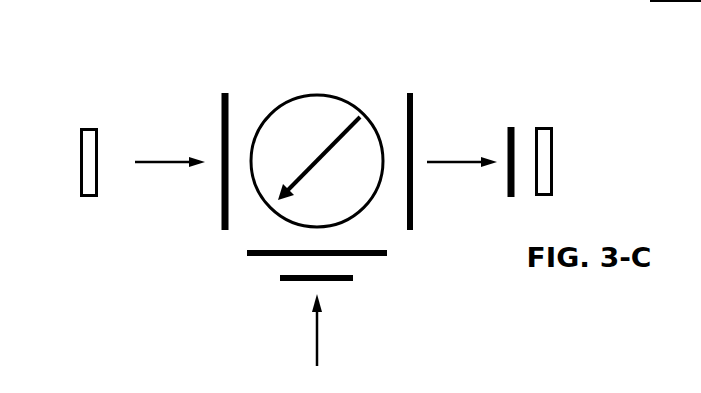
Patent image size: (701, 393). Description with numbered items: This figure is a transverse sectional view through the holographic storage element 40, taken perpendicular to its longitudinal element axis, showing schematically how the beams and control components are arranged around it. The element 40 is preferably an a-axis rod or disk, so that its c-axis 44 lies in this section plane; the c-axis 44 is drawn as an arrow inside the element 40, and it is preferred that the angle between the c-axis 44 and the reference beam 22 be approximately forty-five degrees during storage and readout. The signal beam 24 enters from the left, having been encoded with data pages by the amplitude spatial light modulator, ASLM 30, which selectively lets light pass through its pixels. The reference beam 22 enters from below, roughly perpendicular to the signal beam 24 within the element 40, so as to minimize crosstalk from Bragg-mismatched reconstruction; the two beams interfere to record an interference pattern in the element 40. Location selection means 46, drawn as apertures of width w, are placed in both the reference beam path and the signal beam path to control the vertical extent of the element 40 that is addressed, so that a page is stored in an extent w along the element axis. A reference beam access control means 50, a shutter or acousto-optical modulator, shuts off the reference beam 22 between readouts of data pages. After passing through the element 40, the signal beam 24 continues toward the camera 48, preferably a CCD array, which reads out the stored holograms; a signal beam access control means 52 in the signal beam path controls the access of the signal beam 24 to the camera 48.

The reference beam 22 is at (316, 326).
The signal beam 24 is at (163, 163).
The Amplitude Spatial Light Modulator (ASLM) 30 is at (90, 196).
The element 40 is at (315, 97).
The c-axis 44 is at (343, 128).
The location selection means 46 is at (222, 105).
The camera 48 is at (543, 127).
The reference beam access control means 50 is at (335, 281).
The signal beam access control means 52 is at (508, 132).